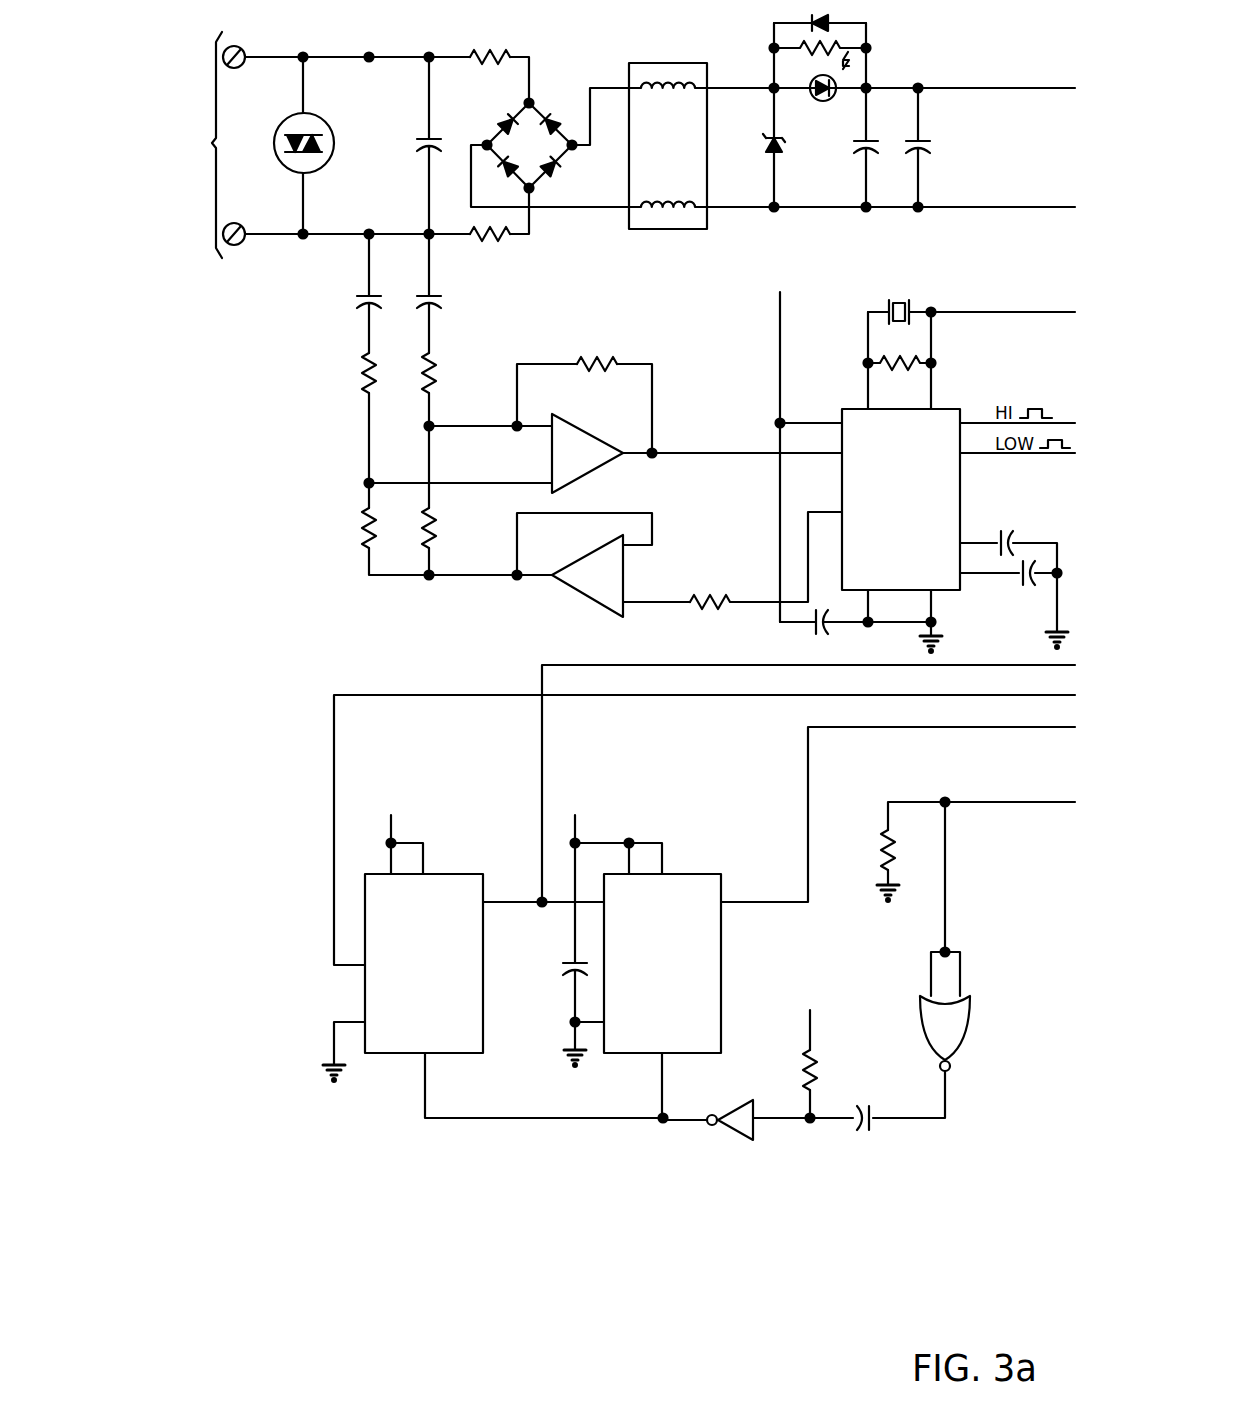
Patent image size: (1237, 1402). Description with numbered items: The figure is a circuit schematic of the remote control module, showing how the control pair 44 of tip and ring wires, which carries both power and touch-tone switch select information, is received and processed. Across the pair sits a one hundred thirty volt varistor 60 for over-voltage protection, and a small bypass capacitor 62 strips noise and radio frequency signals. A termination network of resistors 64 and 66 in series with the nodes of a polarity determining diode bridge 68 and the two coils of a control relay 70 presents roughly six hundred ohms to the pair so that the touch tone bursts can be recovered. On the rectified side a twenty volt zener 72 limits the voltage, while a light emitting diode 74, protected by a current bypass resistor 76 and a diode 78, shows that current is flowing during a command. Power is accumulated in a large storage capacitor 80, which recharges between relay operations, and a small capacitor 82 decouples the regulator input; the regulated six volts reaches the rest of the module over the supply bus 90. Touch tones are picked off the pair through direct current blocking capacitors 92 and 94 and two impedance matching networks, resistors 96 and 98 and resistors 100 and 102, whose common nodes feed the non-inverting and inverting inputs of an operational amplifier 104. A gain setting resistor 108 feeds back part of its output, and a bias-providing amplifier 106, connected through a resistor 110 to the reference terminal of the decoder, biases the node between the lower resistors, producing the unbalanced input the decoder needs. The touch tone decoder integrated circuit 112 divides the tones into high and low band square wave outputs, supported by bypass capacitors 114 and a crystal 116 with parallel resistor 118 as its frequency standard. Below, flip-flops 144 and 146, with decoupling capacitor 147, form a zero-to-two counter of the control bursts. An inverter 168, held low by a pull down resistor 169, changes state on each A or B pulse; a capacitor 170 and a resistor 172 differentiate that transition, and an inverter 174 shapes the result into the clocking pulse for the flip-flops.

The control pair 44 is at (189, 142).
The varistor 60 is at (316, 118).
The bypass capacitor 62 is at (437, 135).
The resistor 64 is at (486, 50).
The resistor 66 is at (490, 243).
The polarity determining diode bridge 68 is at (549, 95).
The control relay 70 is at (686, 63).
The zener 72 is at (780, 152).
The light emitting diode 74 is at (817, 103).
The current bypass resistor 76 is at (796, 50).
The diode 78 is at (838, 22).
The capacitor 80 is at (871, 156).
The capacitor 82 is at (923, 156).
The supply bus 90 is at (781, 320).
The direct current blocking capacitor 92 is at (373, 293).
The direct current blocking capacitor 94 is at (433, 293).
The resistor 96 is at (377, 366).
The resistor 98 is at (378, 530).
The resistor 100 is at (437, 366).
The resistor 102 is at (438, 530).
The operational amplifier 104 is at (590, 470).
The bias-providing amplifier 106 is at (600, 596).
The gain setting resistor 108 is at (600, 360).
The resistor 110 is at (706, 610).
The integrated circuit 112 is at (950, 588).
The capacitors 114 is at (1012, 537).
The crystal 116 is at (899, 298).
The resistor 118 is at (921, 360).
The flip-flop 144 is at (466, 1050).
The flip-flop 146 is at (719, 1030).
The capacitor 147 is at (566, 958).
The inverter 168 is at (966, 1022).
The pull down resistor 169 is at (880, 850).
The capacitor 170 is at (870, 1128).
The resistor 172 is at (815, 1072).
The inverter 174 is at (746, 1130).